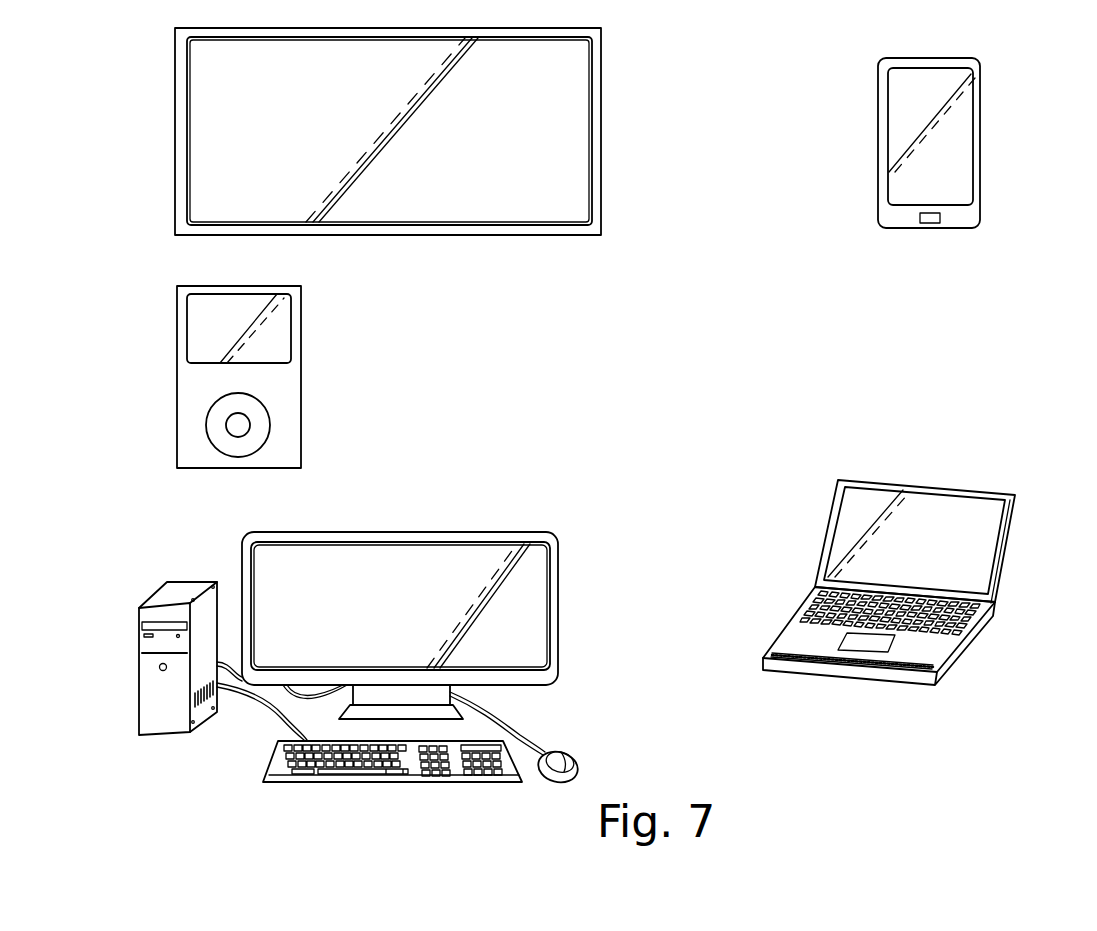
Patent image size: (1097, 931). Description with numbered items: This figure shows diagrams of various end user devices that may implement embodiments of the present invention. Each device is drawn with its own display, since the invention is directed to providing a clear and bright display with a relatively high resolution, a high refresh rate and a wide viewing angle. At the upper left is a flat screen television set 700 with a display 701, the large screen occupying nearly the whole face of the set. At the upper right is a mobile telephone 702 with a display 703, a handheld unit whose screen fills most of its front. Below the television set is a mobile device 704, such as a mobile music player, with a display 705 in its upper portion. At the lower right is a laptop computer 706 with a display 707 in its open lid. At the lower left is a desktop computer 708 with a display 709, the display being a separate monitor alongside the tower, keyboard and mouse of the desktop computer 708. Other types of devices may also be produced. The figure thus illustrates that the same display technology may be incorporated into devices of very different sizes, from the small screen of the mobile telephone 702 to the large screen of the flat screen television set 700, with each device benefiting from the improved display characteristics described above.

The flat screen television set 700 is at (424, 167).
The display 701 is at (588, 132).
The mobile telephone 702 is at (970, 152).
The display 703 is at (973, 147).
The mobile device 704 is at (281, 379).
The display 705 is at (292, 332).
The laptop computer 706 is at (893, 582).
The display 707 is at (1002, 545).
The desktop computer 708 is at (391, 610).
The display 709 is at (558, 633).